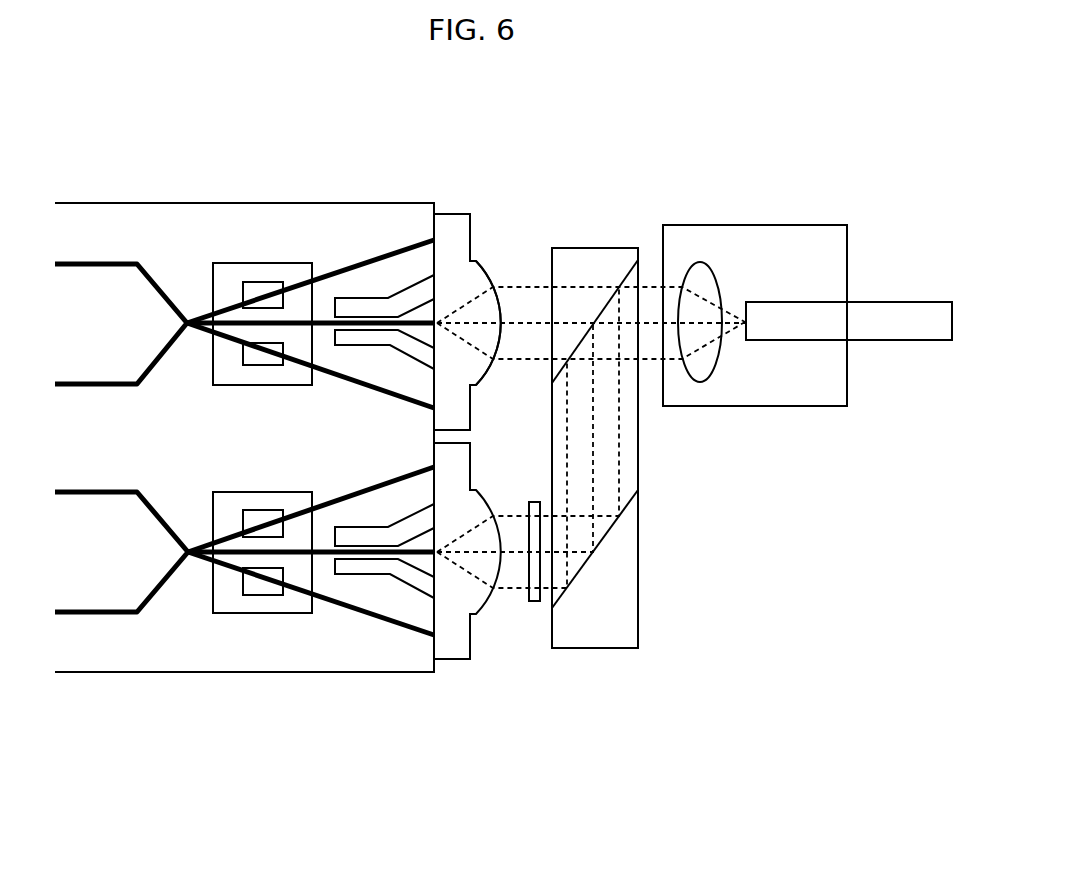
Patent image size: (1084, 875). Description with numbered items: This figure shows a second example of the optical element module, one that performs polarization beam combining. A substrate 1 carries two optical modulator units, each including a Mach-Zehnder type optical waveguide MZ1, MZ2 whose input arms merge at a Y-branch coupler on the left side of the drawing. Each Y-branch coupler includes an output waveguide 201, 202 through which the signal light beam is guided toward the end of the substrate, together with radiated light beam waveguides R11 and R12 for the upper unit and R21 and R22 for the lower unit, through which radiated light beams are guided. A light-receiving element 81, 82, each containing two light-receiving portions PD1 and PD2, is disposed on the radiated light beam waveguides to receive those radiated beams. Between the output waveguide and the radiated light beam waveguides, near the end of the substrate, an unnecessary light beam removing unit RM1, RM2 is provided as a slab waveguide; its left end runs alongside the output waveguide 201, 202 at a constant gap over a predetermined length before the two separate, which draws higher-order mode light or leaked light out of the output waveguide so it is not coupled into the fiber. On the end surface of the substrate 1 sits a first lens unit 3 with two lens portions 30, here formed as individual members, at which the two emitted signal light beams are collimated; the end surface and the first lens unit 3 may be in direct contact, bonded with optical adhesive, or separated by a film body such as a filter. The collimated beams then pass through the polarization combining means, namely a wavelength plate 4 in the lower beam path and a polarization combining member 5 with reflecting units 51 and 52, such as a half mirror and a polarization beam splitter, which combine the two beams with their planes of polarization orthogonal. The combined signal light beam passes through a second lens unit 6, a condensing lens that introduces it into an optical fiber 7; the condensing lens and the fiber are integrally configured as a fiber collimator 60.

The substrate 1 is at (188, 217).
The Mach-Zehnder type optical waveguide MZ1 is at (121, 307).
The Mach-Zehnder type optical waveguide MZ2 is at (121, 535).
The output waveguide 201 is at (315, 322).
The output waveguide 202 is at (330, 555).
The radiated light beam waveguide R11 is at (352, 264).
The radiated light beam waveguide R12 is at (310, 371).
The radiated light beam waveguide R21 is at (311, 505).
The radiated light beam waveguide R22 is at (343, 607).
The light-receiving element 81 is at (250, 263).
The light-receiving element 82 is at (255, 612).
The light-receiving portion PD1 is at (243, 282).
The light-receiving portion PD2 is at (262, 365).
The unnecessary light beam removing unit RM1 is at (365, 298).
The unnecessary light beam removing unit RM2 is at (370, 577).
The first lens unit 3 is at (453, 214).
The lens portion 30 is at (483, 267).
The wavelength plate 4 is at (535, 603).
The polarization combining means 5 is at (600, 648).
The reflecting unit 51 is at (613, 532).
The reflecting unit 52 is at (620, 285).
The second lens unit 6 is at (692, 263).
The fiber collimator 60 is at (778, 406).
The optical fiber 7 is at (883, 340).